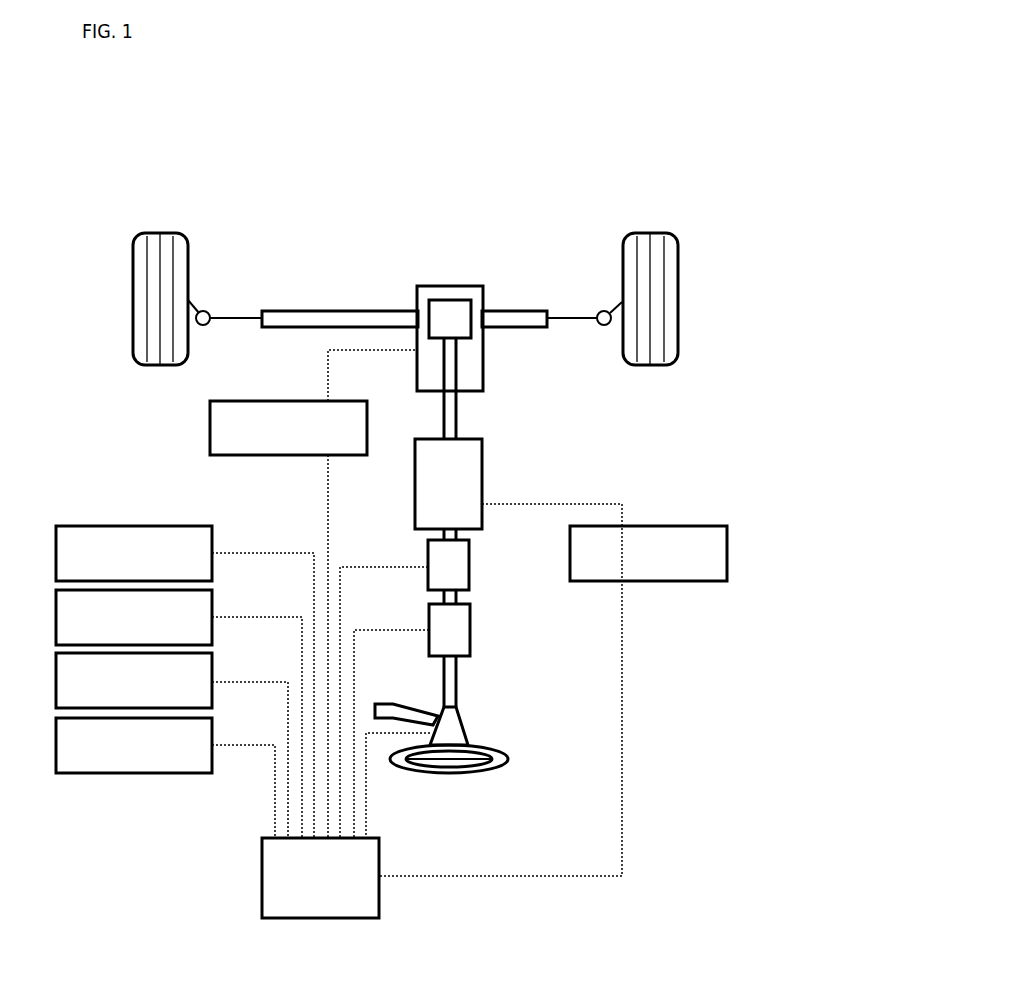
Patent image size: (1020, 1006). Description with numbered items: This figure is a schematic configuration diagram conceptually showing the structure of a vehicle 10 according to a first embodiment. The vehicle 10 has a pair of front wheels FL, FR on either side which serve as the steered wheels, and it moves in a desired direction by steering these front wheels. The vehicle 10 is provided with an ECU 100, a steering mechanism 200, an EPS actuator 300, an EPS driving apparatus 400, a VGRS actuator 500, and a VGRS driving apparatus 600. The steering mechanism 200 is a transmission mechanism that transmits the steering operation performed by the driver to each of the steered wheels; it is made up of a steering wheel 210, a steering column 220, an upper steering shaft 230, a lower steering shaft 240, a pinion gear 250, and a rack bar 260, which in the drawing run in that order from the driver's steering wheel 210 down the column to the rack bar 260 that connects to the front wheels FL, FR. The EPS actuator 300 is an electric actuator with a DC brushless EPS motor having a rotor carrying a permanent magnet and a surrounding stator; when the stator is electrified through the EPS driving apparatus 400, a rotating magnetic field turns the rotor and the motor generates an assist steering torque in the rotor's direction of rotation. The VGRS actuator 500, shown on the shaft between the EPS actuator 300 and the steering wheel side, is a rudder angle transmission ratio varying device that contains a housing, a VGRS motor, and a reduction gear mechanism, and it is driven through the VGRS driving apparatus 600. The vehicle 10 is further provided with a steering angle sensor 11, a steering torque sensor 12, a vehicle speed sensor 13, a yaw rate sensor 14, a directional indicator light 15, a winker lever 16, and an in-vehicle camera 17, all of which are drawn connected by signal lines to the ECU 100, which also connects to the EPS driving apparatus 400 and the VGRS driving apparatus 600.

The vehicle 10 is at (203, 103).
The steering mechanism 200 is at (614, 178).
The front wheel FL is at (125, 241).
The front wheel FR is at (656, 235).
The rack bar 260 is at (291, 310).
The pinion gear 250 is at (446, 299).
The EPS actuator 300 is at (485, 364).
The lower steering shaft 240 is at (458, 420).
The VGRS actuator 500 is at (483, 478).
The steering torque sensor 12 is at (470, 553).
The steering angle sensor 11 is at (470, 633).
The upper steering shaft 230 is at (458, 682).
The steering column 220 is at (461, 728).
The steering wheel 210 is at (469, 770).
The winker lever 16 is at (388, 703).
The EPS driving apparatus 400 is at (211, 403).
The VGRS driving apparatus 600 is at (727, 528).
The vehicle speed sensor 13 is at (212, 526).
The yaw rate sensor 14 is at (212, 590).
The directional indicator light 15 is at (212, 653).
The in-vehicle camera 17 is at (212, 718).
The ECU 100 is at (380, 839).